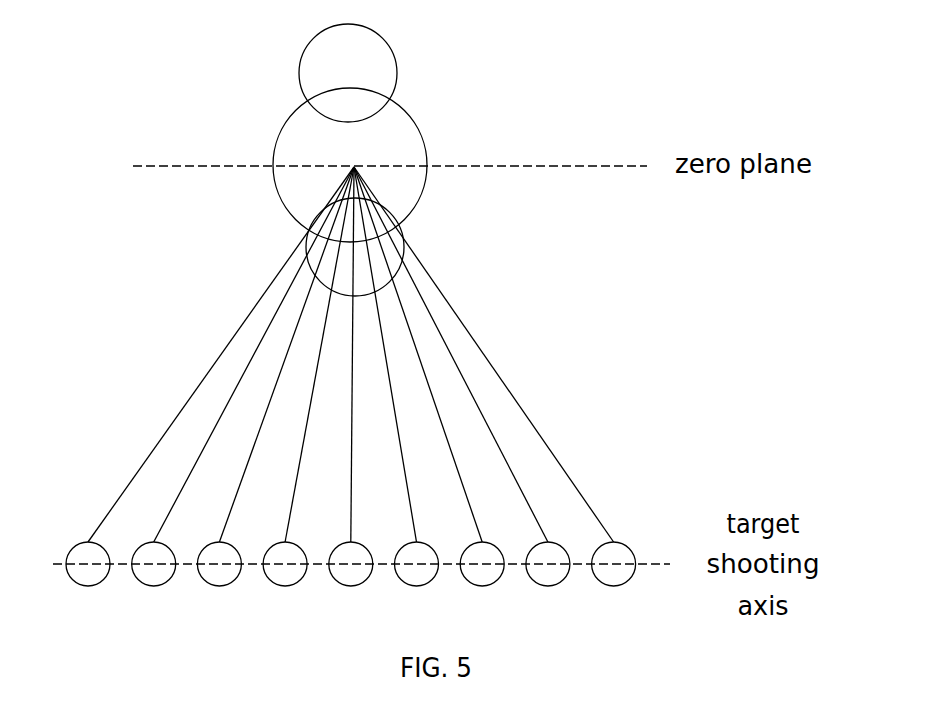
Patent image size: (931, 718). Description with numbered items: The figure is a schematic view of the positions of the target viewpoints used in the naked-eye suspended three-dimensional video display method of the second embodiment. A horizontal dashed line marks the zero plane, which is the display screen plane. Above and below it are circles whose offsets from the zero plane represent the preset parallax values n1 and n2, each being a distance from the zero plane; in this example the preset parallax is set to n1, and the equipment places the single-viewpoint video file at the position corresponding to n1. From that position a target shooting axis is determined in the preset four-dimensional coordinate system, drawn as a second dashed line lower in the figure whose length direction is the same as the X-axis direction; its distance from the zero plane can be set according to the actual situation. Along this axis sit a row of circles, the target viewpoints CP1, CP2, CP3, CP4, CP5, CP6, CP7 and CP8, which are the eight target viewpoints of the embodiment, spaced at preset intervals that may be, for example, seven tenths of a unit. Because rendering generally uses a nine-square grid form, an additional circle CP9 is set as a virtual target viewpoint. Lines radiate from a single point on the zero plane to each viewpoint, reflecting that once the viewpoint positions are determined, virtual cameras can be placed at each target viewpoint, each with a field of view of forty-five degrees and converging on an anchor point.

The preset parallax n1 is at (408, 247).
The preset parallax n2 is at (397, 74).
The target viewpoint CP1 is at (88, 582).
The target viewpoint CP2 is at (154, 582).
The target viewpoint CP3 is at (219, 582).
The target viewpoint CP4 is at (285, 582).
The target viewpoint CP5 is at (351, 582).
The target viewpoint CP6 is at (417, 582).
The target viewpoint CP7 is at (482, 582).
The target viewpoint CP8 is at (548, 582).
The virtual target viewpoint CP9 is at (614, 582).